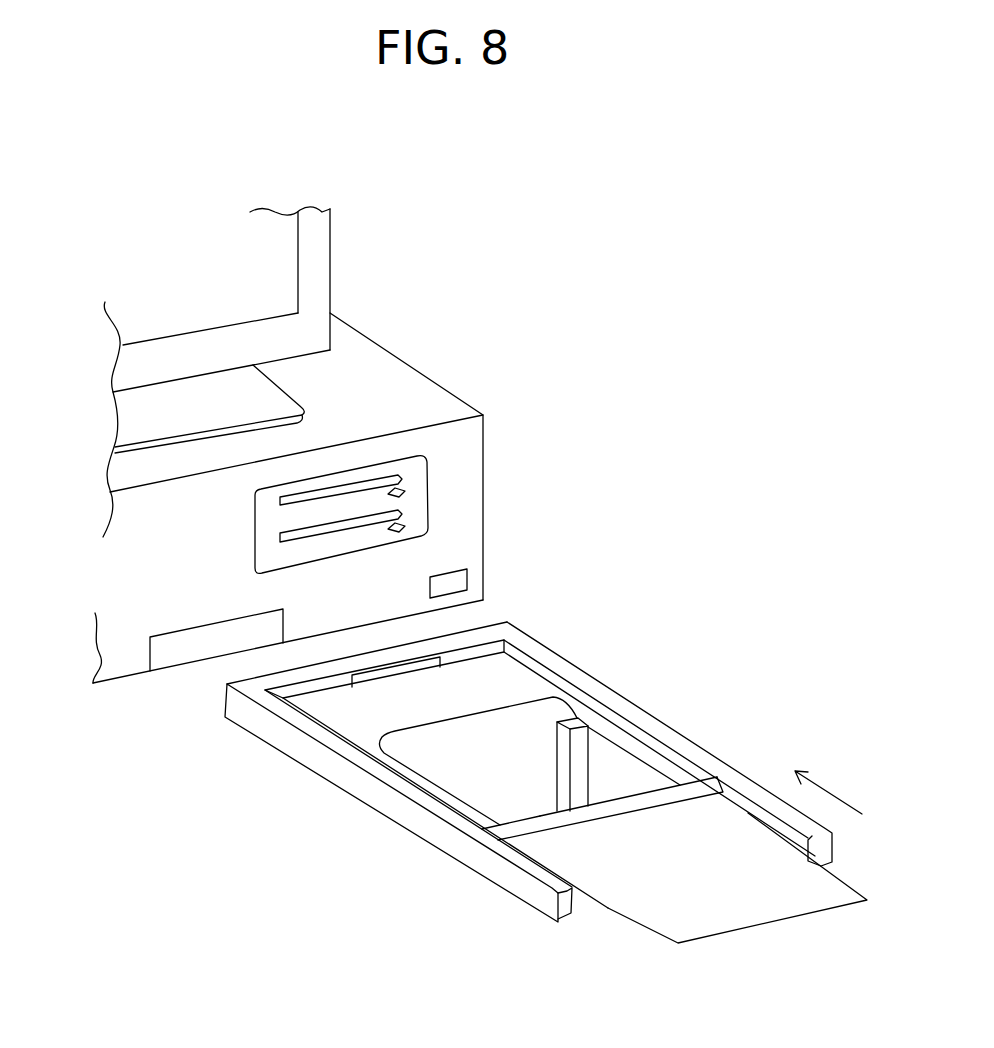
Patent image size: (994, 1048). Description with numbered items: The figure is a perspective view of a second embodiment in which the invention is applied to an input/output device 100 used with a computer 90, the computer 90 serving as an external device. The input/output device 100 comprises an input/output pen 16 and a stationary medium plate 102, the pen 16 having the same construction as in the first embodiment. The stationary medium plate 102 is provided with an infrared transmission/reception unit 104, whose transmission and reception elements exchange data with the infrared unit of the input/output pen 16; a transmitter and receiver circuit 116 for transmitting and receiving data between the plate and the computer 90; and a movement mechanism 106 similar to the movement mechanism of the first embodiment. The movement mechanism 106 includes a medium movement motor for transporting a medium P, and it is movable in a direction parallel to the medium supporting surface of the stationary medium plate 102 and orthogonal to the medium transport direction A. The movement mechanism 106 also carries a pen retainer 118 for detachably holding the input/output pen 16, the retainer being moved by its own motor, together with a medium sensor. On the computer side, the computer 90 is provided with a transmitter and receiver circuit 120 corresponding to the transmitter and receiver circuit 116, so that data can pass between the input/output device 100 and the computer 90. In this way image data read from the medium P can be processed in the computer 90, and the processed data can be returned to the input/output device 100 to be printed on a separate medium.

The computer 90 is at (538, 537).
The input/output device 100 is at (465, 751).
The stationary medium plate 102 is at (507, 678).
The infrared transmission/reception unit 104 is at (400, 670).
The movement mechanism 106 is at (558, 783).
The input/output pen 16 is at (580, 757).
The transmitter and receiver circuit 116 is at (303, 668).
The pen retainer 118 is at (558, 802).
The transmitter and receiver circuit 120 is at (167, 654).
The medium P is at (782, 908).
The medium transport direction A is at (850, 811).